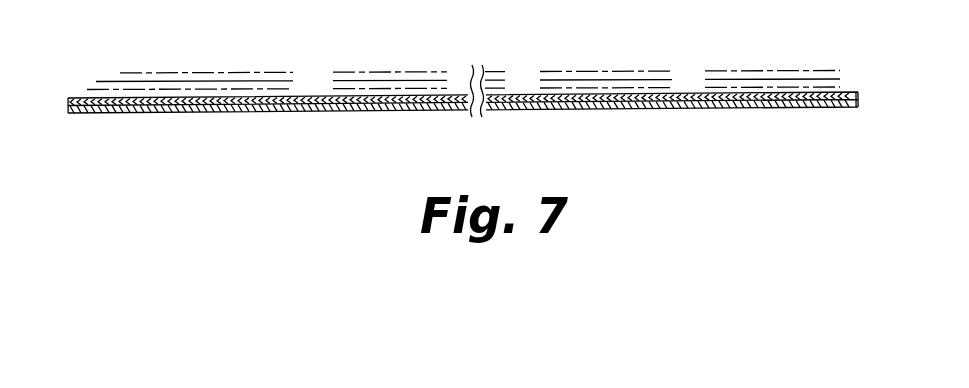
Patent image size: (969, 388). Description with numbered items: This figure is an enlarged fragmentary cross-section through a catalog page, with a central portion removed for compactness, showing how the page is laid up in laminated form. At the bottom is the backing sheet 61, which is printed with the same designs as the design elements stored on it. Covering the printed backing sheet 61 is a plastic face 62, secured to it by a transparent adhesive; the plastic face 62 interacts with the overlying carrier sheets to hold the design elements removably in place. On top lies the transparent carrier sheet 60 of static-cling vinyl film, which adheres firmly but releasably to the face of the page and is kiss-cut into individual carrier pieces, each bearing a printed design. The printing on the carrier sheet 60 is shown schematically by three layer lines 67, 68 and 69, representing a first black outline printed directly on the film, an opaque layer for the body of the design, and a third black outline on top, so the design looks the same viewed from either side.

The transparent carrier sheet 60 is at (468, 100).
The backing sheet 61 is at (775, 111).
The plastic face 62 is at (858, 99).
The first layer line 67 is at (87, 90).
The second layer line 68 is at (93, 81).
The third layer line 69 is at (97, 82).